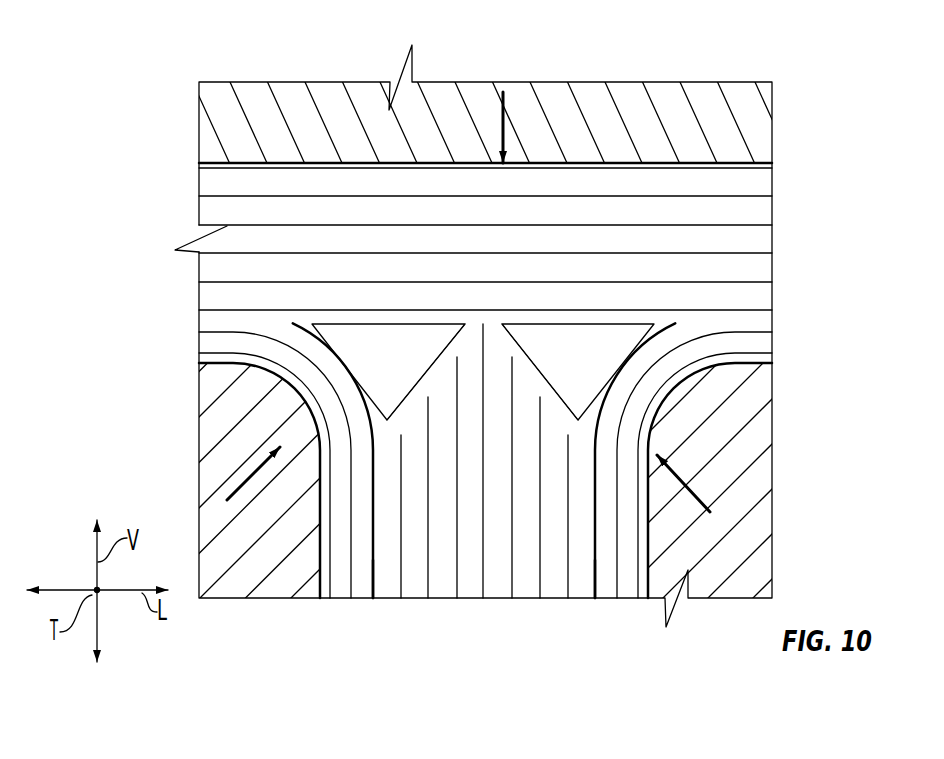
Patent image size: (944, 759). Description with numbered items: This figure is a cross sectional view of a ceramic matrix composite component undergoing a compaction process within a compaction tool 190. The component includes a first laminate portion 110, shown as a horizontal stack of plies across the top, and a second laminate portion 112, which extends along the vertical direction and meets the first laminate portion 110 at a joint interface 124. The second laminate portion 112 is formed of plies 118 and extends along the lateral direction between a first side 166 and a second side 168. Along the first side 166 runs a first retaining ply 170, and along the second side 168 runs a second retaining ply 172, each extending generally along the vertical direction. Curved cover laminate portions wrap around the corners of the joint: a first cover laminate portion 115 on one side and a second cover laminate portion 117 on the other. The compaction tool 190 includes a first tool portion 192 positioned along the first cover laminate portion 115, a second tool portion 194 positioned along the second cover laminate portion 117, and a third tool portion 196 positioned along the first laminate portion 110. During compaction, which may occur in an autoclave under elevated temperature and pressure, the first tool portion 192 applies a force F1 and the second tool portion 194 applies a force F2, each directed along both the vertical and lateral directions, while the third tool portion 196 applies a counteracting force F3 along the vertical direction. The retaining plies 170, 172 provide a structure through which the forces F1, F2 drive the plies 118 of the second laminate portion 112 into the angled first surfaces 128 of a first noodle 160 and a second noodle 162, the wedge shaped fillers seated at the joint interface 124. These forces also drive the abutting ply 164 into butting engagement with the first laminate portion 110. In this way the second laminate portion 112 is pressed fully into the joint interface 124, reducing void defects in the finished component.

The compaction tool 190 is at (153, 150).
The third tool portion 196 is at (687, 100).
The first laminate portion 110 is at (785, 165).
The first tool portion 192 is at (212, 440).
The second tool portion 194 is at (753, 428).
The first cover laminate portion 115 is at (192, 328).
The second cover laminate portion 117 is at (783, 328).
The first retaining ply 170 is at (337, 370).
The second retaining ply 172 is at (630, 372).
The first noodle 160 is at (338, 333).
The second noodle 162 is at (615, 333).
The joint interface 124 is at (420, 322).
The abutting ply 164 is at (485, 362).
The angled first surfaces 128 is at (407, 398).
The second laminate portion 112 is at (593, 613).
The plies 118 is at (448, 537).
The first side 166 is at (372, 633).
The second side 168 is at (582, 639).
The force F1 is at (242, 488).
The force F2 is at (683, 491).
The counteracting force F3 is at (521, 127).